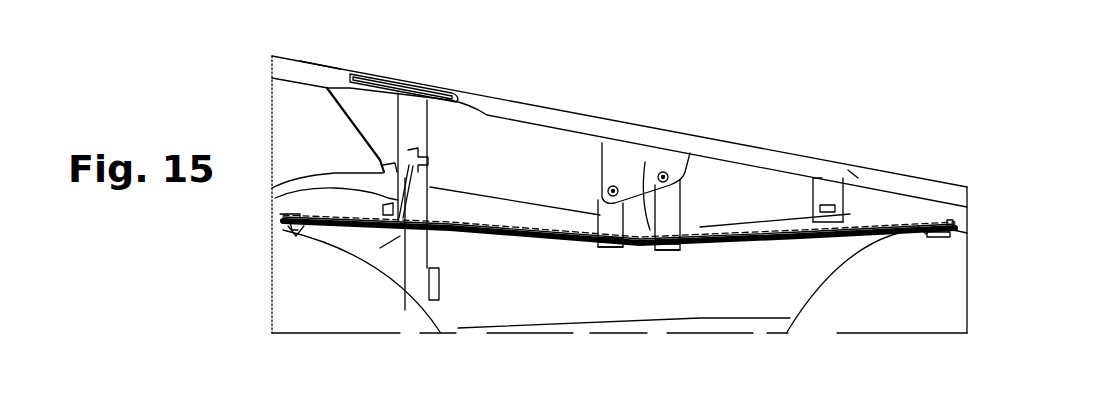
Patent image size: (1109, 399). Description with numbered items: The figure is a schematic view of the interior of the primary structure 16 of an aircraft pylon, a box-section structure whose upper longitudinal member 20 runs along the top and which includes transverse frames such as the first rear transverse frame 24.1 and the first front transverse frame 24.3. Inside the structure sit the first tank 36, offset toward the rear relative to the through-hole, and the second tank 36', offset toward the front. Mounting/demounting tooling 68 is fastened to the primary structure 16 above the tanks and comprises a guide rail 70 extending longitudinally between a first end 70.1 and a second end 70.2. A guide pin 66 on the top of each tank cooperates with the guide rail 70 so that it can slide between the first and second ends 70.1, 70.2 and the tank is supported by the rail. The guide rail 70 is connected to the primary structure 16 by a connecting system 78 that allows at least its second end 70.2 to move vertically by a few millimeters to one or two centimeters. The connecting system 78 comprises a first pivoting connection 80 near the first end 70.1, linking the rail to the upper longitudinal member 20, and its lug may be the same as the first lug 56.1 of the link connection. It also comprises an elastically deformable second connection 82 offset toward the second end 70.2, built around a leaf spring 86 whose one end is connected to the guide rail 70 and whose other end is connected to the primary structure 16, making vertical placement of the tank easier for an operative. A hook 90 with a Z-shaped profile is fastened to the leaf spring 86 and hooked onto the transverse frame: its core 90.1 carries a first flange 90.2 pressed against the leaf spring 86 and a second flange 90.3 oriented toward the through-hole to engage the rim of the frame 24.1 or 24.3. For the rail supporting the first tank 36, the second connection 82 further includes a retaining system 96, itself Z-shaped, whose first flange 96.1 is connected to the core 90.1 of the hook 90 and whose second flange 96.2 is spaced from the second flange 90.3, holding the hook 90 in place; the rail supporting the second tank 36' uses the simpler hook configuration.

The primary structure 16 is at (317, 102).
The upper longitudinal member 20 is at (529, 103).
The first rear transverse frame 24.1 is at (843, 172).
The first front transverse frame 24.3 is at (419, 95).
The first tank 36 is at (712, 307).
The second tank 36' is at (318, 281).
The first lug 56.1 is at (648, 162).
The guide pin 66 is at (296, 237).
The mounting/demounting tooling 68 is at (511, 211).
The guide rail 70 is at (502, 248).
The first end of the guide rail 70.1 is at (660, 252).
The second end of the guide rail 70.2 is at (281, 218).
The connecting system 78 is at (394, 133).
The first pivoting connection 80 is at (599, 166).
The second connection 82 is at (379, 158).
The leaf spring 86 is at (398, 230).
The hook 90 is at (396, 171).
The core 90.1 is at (382, 172).
The first flange 90.2 is at (392, 207).
The second flange 90.3 is at (405, 145).
The retaining system 96 is at (430, 178).
The first flange of the retaining system 96.1 is at (421, 185).
The second flange of the retaining system 96.2 is at (424, 167).